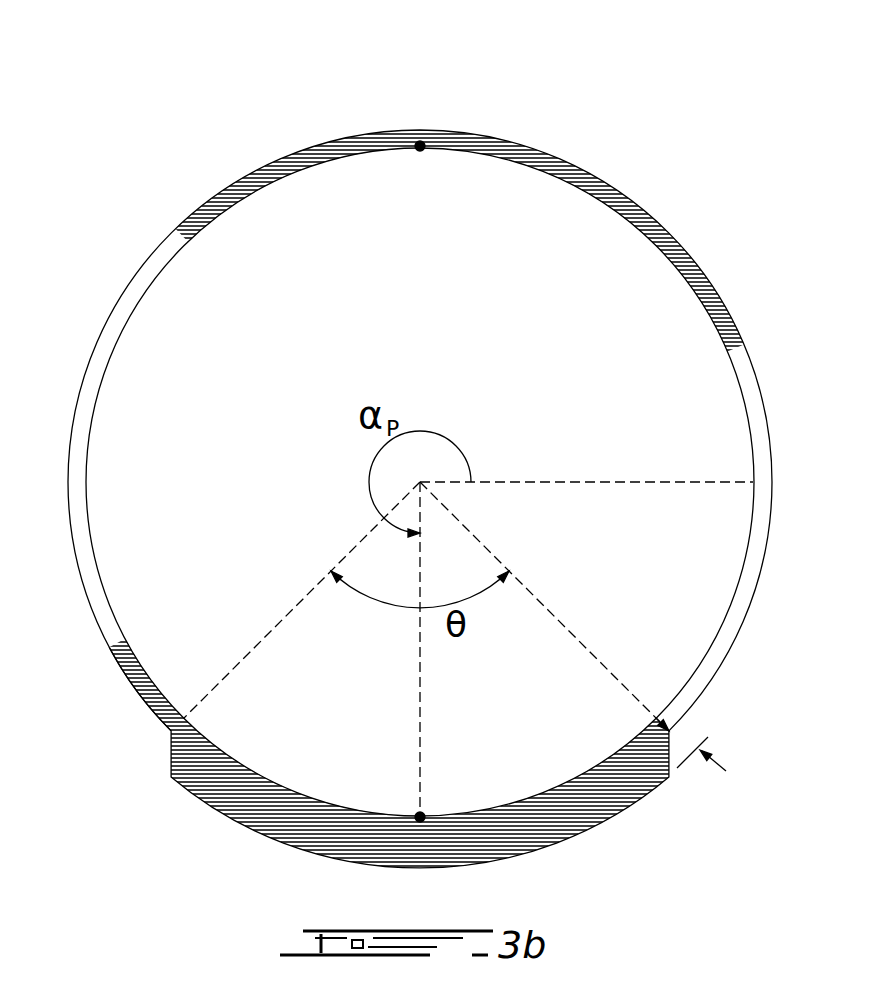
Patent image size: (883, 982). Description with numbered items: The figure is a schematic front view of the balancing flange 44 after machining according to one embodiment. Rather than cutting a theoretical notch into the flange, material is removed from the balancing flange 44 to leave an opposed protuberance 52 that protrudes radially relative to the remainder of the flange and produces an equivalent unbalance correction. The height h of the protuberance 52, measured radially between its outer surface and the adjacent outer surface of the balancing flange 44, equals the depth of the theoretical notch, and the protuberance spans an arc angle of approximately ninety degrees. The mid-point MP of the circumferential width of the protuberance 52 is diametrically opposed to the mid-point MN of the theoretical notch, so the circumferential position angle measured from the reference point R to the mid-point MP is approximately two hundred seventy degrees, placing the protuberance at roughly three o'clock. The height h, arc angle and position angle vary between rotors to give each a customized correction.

The balancing flange 44 is at (645, 224).
The protuberance 52 is at (594, 808).
The mid-point of the circumferential width of the theoretical notch MN is at (420, 146).
The mid-point of the circumferential width of the protuberance MP is at (420, 820).
The reference point R is at (753, 482).
The height of the protuberance h is at (688, 733).